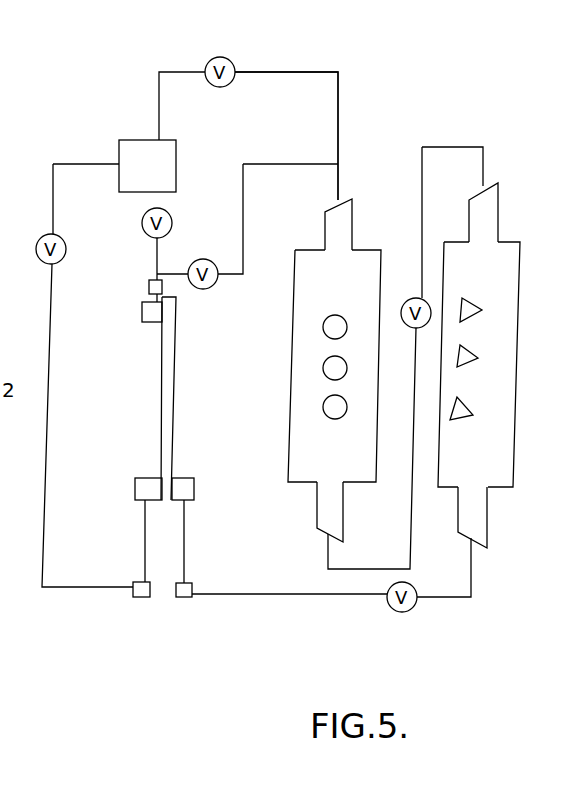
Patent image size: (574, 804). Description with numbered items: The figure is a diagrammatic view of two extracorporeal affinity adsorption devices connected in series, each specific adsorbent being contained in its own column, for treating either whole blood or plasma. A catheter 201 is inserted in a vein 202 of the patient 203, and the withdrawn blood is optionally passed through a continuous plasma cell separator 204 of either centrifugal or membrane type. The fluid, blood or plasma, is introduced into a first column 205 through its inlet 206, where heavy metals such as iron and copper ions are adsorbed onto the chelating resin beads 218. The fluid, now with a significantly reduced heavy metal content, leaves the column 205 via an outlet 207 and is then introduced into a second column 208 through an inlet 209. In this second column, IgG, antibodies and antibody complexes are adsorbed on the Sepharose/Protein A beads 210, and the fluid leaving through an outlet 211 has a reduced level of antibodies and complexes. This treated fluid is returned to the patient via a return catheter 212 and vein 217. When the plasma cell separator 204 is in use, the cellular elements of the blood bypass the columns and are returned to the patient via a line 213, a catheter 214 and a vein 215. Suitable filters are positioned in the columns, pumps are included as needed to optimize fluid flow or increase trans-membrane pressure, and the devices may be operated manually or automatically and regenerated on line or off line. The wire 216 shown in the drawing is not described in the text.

The catheter 201 is at (149, 287).
The vein 202 is at (142, 314).
The patient 203 is at (161, 378).
The continuous plasma cell separator 204 is at (147, 107).
The column 205 is at (320, 298).
The inlet 206 is at (353, 222).
The outlet 207 is at (317, 509).
The column 208 is at (485, 387).
The inlet 209 is at (498, 200).
The Sepharose 4BCL/Protein A beads 210 is at (476, 308).
The outlet 211 is at (493, 520).
The catheter 212 is at (187, 598).
The line 213 is at (52, 200).
The catheter 214 is at (145, 598).
The vein 215 is at (148, 478).
The upper circuit wire 216 is at (340, 117).
The vein 217 is at (181, 478).
The Chelex 100 beads 218 is at (323, 368).